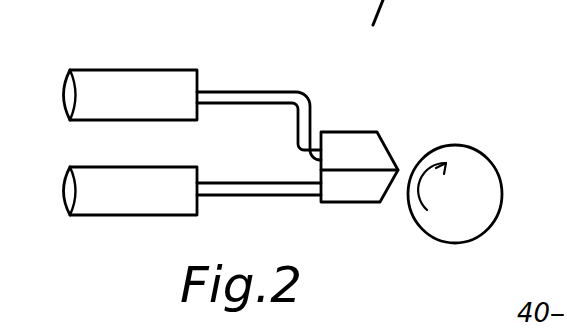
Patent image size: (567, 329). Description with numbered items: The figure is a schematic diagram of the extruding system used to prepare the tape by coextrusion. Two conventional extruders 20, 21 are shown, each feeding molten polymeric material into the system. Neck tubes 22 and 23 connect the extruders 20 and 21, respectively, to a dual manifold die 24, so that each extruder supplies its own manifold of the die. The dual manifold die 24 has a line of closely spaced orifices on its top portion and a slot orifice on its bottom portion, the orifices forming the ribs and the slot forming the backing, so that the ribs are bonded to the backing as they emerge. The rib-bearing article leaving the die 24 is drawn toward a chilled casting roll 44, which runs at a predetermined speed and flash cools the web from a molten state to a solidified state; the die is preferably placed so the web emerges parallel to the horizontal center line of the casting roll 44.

The extruder 20 is at (128, 75).
The extruder 21 is at (160, 205).
The neck tube 22 is at (278, 93).
The neck tube 23 is at (275, 196).
The dual manifold die 24 is at (366, 127).
The chilled casting roll 44 is at (480, 160).